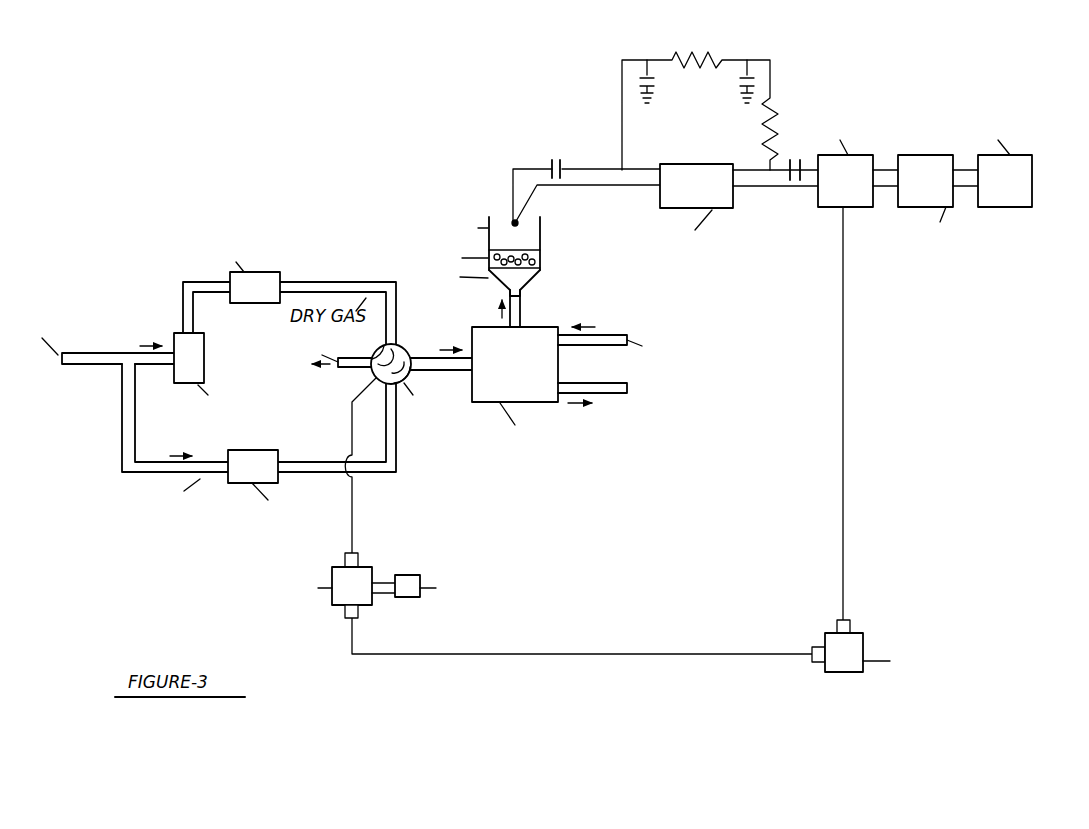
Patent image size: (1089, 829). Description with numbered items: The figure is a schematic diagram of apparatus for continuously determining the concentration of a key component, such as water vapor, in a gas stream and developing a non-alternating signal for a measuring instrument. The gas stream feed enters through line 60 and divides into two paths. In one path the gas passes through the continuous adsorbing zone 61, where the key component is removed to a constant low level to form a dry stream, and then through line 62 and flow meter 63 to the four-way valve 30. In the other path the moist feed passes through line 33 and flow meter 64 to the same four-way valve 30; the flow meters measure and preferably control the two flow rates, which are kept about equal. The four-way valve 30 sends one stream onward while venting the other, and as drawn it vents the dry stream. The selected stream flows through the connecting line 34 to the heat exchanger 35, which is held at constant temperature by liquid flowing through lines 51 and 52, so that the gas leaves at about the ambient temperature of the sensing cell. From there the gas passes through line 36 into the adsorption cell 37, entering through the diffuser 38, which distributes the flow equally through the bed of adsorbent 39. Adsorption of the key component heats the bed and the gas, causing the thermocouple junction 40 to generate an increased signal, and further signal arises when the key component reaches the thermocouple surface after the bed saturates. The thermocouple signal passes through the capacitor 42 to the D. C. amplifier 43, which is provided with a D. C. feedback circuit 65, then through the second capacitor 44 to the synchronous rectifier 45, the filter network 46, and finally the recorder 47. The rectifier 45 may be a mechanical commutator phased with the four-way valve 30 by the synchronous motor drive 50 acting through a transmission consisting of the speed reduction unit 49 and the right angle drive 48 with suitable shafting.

The four-way valve 30 is at (406, 351).
The line 33 is at (122, 419).
The line to heat exchanger 34 is at (417, 352).
The heat exchanger 35 is at (558, 365).
The line 36 is at (522, 305).
The adsorption cell 37 is at (540, 230).
The diffuser 38 is at (533, 272).
The bed of adsorbent 39 is at (540, 258).
The thermocouple junction 40 is at (507, 214).
The capacitor 42 is at (558, 160).
The D. C. amplifier 43 is at (697, 164).
The second capacitor 44 is at (793, 160).
The synchronous rectifier 45 is at (824, 207).
The filter network 46 is at (935, 158).
The recorder 47 is at (1014, 208).
The right angle drive 48 is at (863, 636).
The speed reduction unit 49 is at (338, 572).
The synchronous motor drive 50 is at (410, 575).
The line 51 is at (607, 335).
The line 52 is at (614, 395).
The line 60 is at (96, 366).
The continuous adsorbing zone 61 is at (204, 358).
The line 62 is at (183, 292).
The flow meter 63 is at (274, 272).
The flow meter 64 is at (278, 455).
The D. C. feedback circuit 65 is at (760, 60).